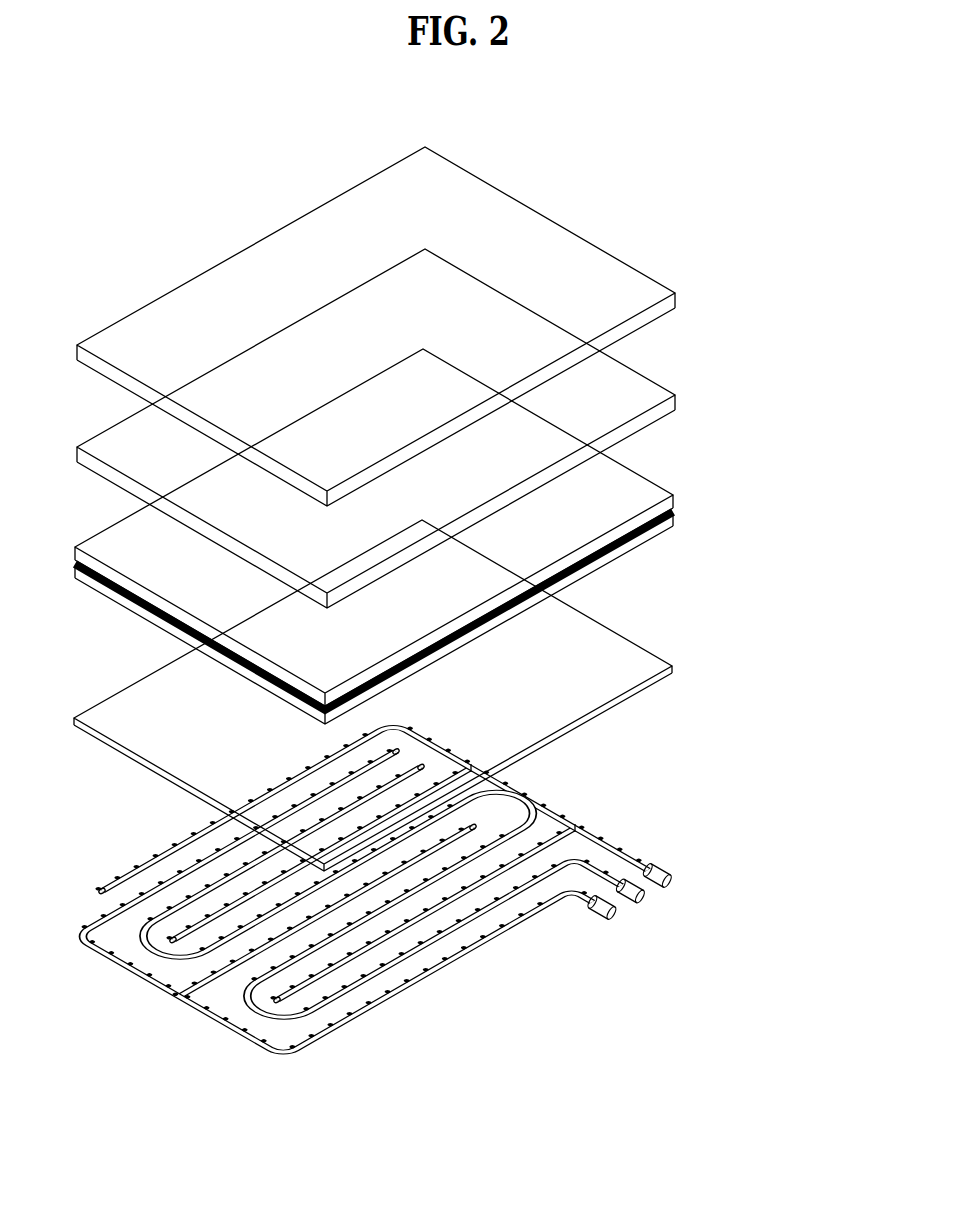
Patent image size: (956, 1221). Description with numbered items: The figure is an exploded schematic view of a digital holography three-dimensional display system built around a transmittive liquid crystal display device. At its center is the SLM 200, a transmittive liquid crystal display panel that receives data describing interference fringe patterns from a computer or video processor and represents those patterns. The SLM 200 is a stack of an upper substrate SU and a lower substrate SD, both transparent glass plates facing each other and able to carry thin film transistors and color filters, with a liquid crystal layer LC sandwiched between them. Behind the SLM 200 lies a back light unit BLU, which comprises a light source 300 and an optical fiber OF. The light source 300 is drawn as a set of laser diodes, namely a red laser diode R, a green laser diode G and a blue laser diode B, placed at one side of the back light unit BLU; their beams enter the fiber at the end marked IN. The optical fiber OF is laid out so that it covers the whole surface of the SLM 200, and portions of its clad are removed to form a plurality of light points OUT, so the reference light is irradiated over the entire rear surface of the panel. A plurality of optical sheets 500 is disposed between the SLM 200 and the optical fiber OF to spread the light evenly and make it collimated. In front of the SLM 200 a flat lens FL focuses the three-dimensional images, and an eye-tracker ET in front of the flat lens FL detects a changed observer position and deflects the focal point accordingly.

The eye-tracker ET is at (676, 297).
The flat lens FL is at (676, 399).
The SLM 200 is at (438, 536).
The upper substrate SU is at (673, 502).
The liquid crystal layer LC is at (673, 511).
The lower substrate SD is at (413, 620).
The back light unit BLU is at (440, 794).
The optical sheets 500 is at (674, 670).
The optical fiber OF is at (497, 938).
The light points OUT is at (116, 878).
The input end of optical fiber IN is at (655, 856).
The light source 300 is at (677, 905).
The red laser diode R is at (672, 879).
The green laser diode G is at (646, 898).
The blue laser diode B is at (618, 913).